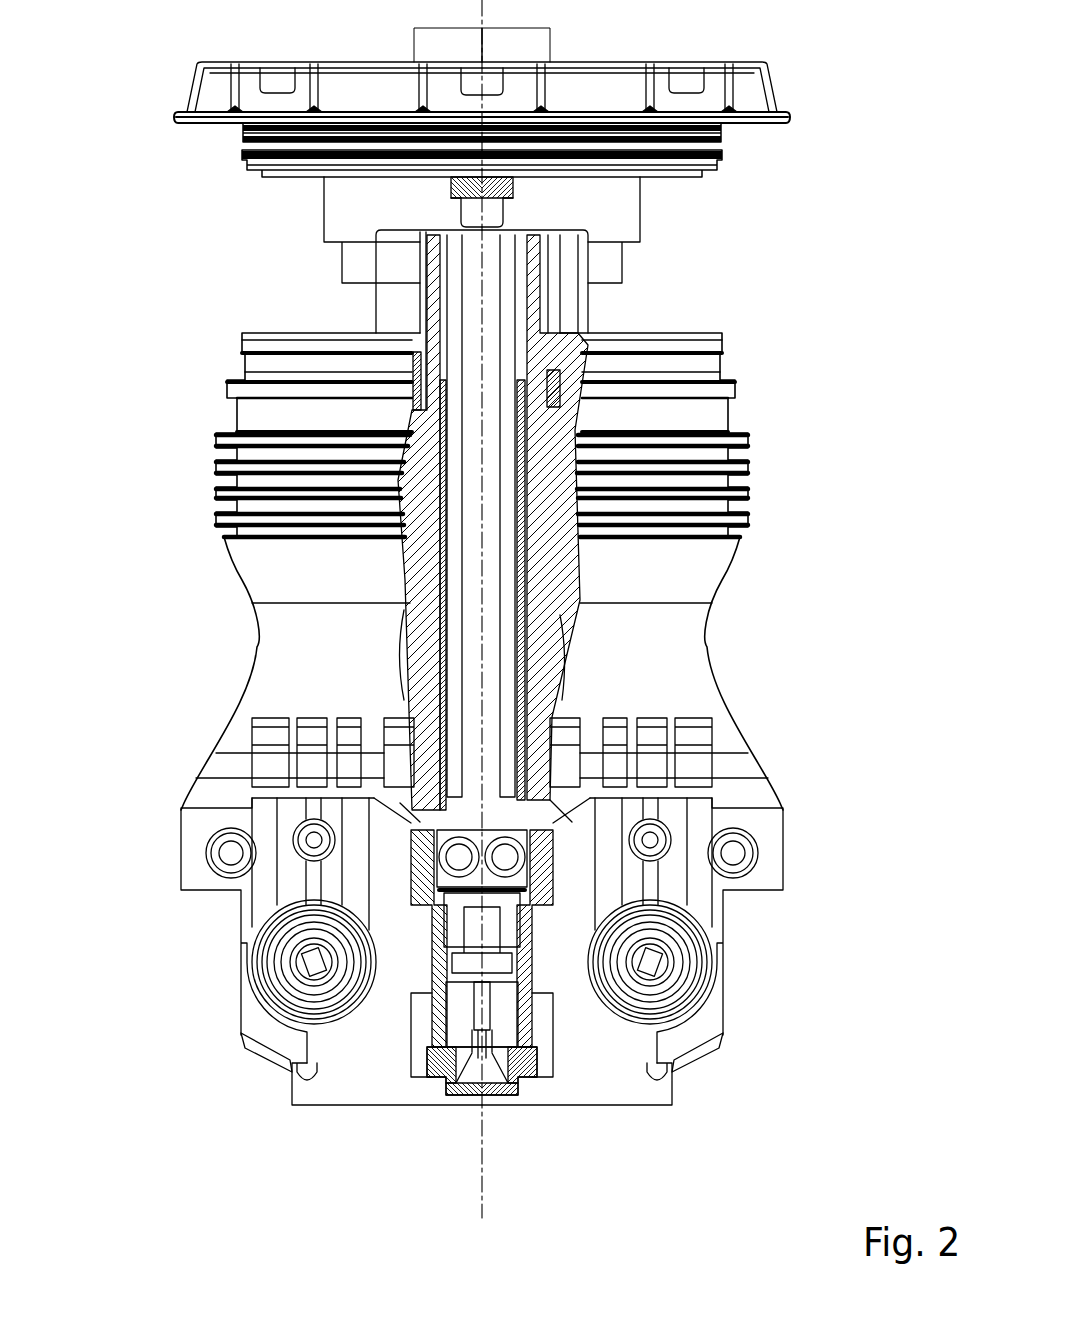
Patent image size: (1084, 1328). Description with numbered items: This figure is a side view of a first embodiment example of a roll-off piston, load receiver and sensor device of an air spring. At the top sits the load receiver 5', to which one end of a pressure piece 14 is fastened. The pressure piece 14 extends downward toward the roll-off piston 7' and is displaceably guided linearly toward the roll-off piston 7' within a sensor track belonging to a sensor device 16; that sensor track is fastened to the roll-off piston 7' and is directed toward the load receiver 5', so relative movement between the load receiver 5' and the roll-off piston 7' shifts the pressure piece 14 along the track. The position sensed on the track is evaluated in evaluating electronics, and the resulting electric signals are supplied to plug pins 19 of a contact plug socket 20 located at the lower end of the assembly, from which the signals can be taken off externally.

The load receiver 5' is at (554, 93).
The pressure piece 14 is at (470, 315).
The roll-off piston 7' is at (417, 571).
The sensor device 16 is at (905, 637).
The plug pins 19 is at (517, 1200).
The contact plug socket 20 is at (583, 1200).